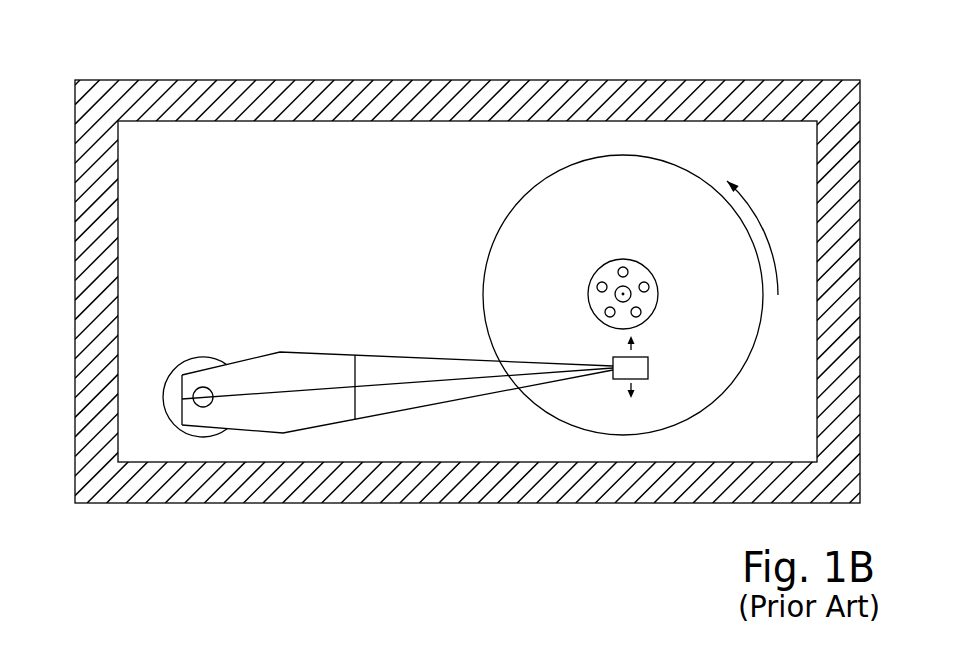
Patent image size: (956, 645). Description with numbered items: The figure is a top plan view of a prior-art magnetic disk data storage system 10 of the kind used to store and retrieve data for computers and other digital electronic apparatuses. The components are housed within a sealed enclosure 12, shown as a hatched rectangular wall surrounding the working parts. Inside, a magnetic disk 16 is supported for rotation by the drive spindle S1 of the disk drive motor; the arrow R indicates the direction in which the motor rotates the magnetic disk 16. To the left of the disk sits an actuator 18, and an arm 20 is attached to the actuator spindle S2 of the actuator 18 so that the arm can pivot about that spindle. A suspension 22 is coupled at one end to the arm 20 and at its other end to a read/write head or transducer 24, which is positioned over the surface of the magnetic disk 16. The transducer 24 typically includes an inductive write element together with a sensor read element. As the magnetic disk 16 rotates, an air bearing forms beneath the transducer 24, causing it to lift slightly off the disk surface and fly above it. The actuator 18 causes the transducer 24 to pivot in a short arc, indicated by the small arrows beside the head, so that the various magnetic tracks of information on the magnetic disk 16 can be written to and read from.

The magnetic disk data storage system 10 is at (836, 61).
The sealed enclosure 12 is at (450, 495).
The magnetic disk 16 is at (645, 211).
The actuator 18 is at (212, 358).
The arm 20 is at (323, 365).
The suspension 22 is at (423, 400).
The read/write head or transducer 24 is at (642, 368).
The drive spindle S1 is at (646, 273).
The actuator spindle S2 is at (208, 406).
The arrow indicating disk rotation R is at (757, 238).